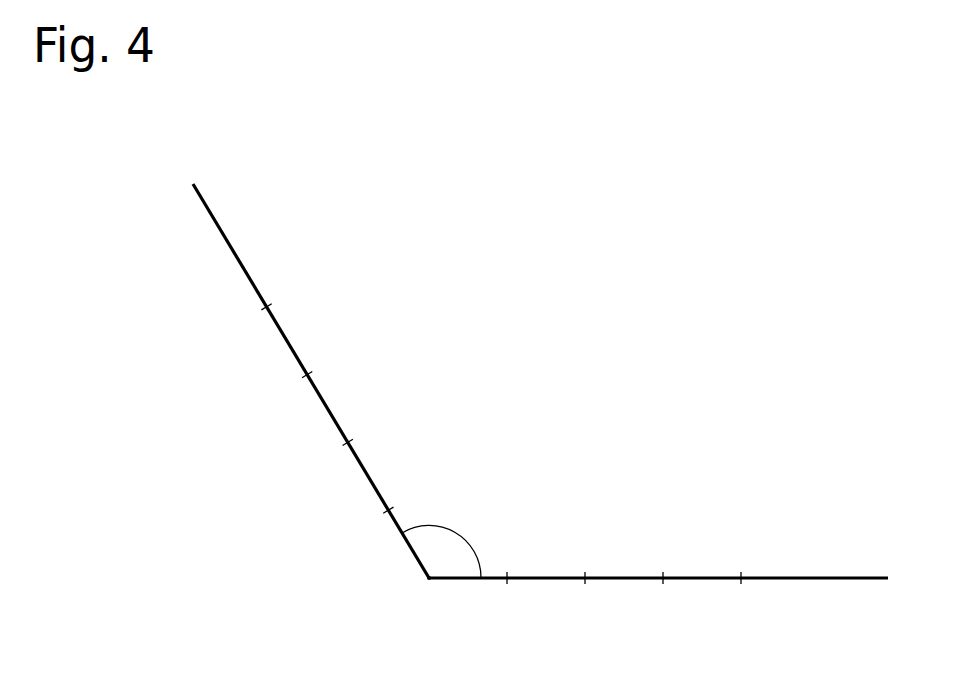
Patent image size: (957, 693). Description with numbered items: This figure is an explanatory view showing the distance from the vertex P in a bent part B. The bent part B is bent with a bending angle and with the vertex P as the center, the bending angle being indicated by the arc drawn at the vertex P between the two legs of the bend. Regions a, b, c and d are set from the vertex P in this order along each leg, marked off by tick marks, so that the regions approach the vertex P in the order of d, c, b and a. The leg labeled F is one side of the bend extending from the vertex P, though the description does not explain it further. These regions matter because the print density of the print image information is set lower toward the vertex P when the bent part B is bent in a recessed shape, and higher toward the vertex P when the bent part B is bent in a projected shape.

The front line F is at (228, 226).
The bent part B is at (458, 488).
The vertex P is at (423, 582).
The region a is at (445, 563).
The region b is at (462, 529).
The region c is at (481, 496).
The region d is at (499, 462).